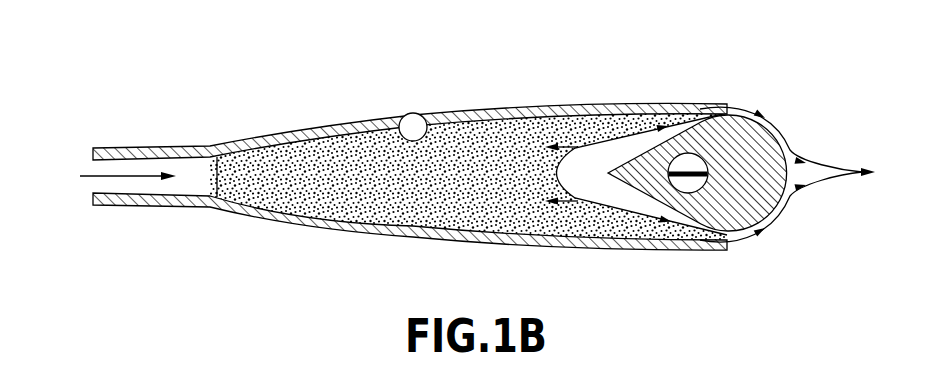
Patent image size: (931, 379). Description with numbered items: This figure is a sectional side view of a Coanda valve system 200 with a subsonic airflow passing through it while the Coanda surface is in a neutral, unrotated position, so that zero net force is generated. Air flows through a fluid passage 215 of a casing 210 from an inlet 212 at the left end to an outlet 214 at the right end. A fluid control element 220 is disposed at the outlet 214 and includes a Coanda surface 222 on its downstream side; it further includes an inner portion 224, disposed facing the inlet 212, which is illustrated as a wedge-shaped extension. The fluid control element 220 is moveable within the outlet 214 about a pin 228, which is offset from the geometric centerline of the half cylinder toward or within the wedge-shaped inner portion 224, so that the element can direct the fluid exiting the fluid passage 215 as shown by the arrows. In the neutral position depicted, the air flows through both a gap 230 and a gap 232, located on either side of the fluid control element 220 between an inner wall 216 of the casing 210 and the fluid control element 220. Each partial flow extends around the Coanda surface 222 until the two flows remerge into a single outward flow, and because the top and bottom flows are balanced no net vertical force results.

The Coanda valve system 200 is at (451, 161).
The casing 210 is at (292, 222).
The inlet 212 is at (90, 186).
The outlet 214 is at (744, 106).
The fluid passage 215 is at (190, 167).
The inner wall 216 is at (413, 113).
The fluid control element 220 is at (716, 185).
The Coanda surface 222 is at (797, 153).
The inner portion 224 is at (648, 150).
The pin 228 is at (691, 182).
The gap 230 is at (734, 107).
The gap 232 is at (738, 233).